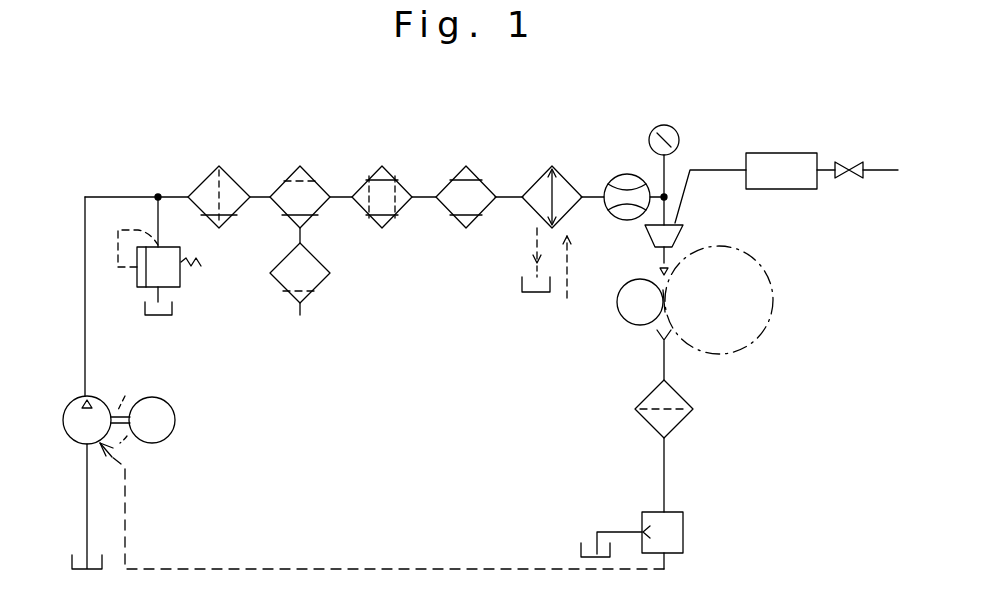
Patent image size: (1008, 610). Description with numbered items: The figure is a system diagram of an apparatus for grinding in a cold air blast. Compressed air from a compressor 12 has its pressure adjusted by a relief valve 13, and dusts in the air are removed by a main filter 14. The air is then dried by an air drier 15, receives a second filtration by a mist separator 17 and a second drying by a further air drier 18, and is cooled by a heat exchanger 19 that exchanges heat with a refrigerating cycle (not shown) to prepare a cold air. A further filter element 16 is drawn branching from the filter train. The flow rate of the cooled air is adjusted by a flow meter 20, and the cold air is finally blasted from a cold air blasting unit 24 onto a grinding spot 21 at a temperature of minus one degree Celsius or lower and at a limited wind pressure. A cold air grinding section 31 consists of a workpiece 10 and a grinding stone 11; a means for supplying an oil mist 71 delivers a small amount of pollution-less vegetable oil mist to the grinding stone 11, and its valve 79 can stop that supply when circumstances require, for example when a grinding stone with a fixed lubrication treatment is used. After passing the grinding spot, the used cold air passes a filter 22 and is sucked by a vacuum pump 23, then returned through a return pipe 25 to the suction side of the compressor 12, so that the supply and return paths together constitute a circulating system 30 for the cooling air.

The workpiece 10 is at (632, 321).
The grinding stone 11 is at (762, 258).
The compressor 12 is at (118, 401).
The relief valve 13 is at (184, 281).
The main filter 14 is at (203, 181).
The air drier 15 is at (306, 173).
The filter 16 is at (320, 284).
The mist separator 17 is at (396, 213).
The air drier 18 is at (481, 182).
The heat exchanger 19 is at (562, 180).
The flow meter 20 is at (630, 174).
The grinding spot 21 is at (663, 287).
The filter 22 is at (680, 421).
The vacuum pump 23 is at (684, 532).
The cold air blasting unit 24 is at (680, 240).
The return pipe 25 is at (458, 568).
The circulating system 30 is at (312, 135).
The cold air grinding section 31 is at (631, 349).
The means for supplying an oil mist 71 is at (772, 153).
The valve 79 is at (858, 162).